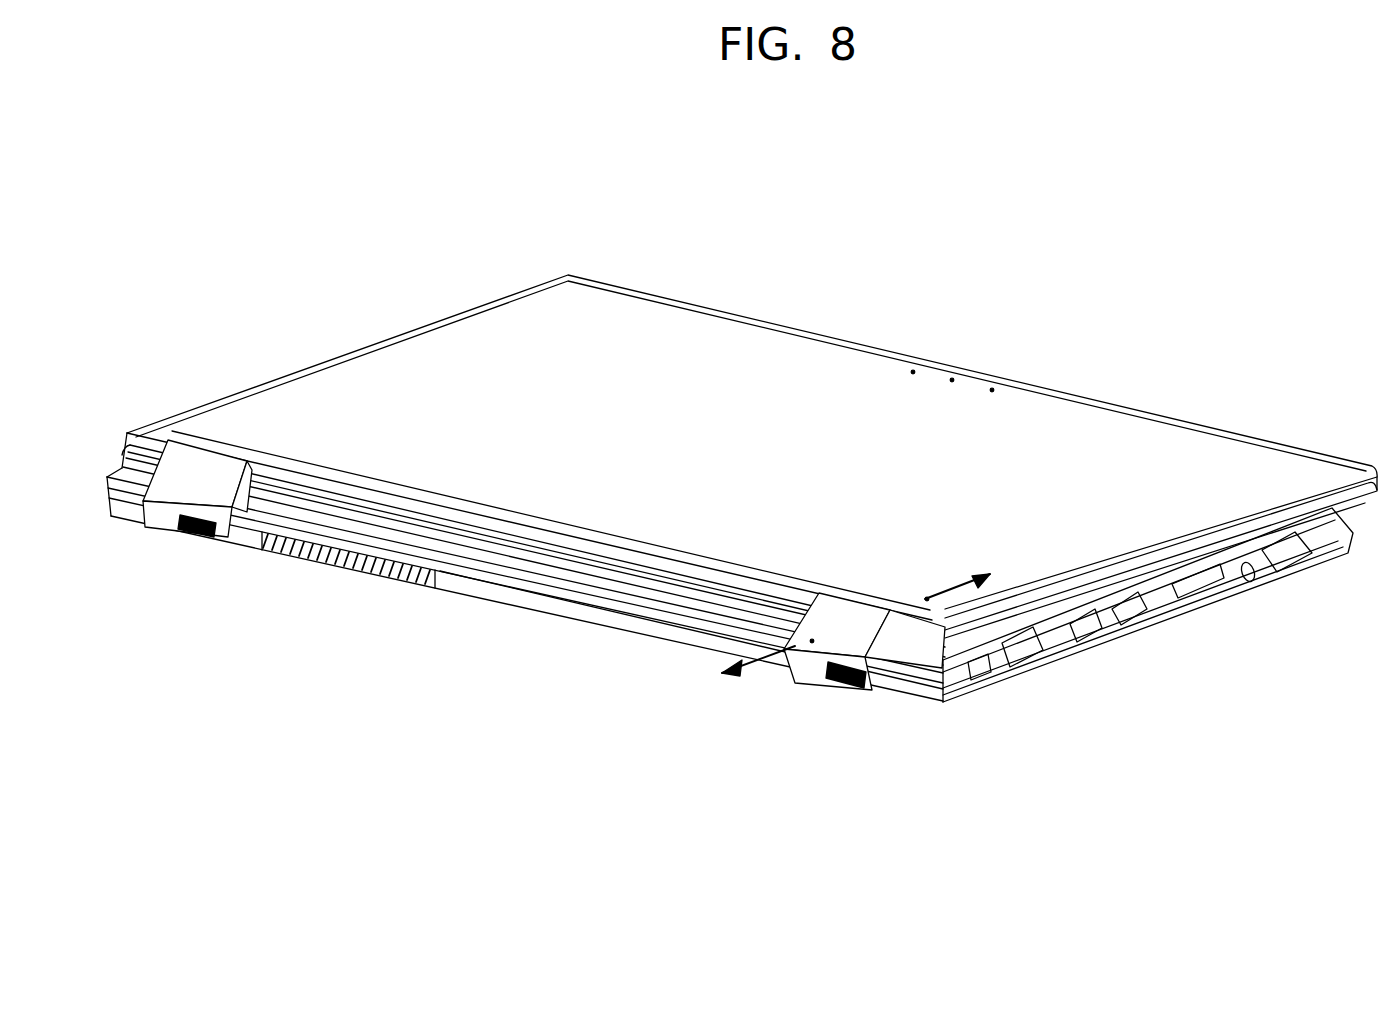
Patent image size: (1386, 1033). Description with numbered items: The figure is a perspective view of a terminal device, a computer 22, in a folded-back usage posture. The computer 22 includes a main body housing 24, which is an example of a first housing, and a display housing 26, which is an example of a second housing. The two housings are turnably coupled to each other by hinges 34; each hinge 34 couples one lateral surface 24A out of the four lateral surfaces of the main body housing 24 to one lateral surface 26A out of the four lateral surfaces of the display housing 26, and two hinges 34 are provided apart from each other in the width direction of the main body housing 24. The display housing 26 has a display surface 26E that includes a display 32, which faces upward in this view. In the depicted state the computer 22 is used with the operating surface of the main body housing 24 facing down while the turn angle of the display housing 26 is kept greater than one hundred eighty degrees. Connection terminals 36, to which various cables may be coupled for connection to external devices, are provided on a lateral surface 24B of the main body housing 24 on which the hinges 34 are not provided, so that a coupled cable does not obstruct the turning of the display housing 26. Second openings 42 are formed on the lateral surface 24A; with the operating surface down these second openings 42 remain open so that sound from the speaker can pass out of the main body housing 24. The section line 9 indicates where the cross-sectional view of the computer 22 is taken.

The line 9- 9 is at (1010, 583).
The computer 22 is at (805, 237).
The main body housing 24 is at (110, 513).
The lateral surface 24A is at (597, 630).
The lateral surface 24B is at (999, 676).
The display housing 26 is at (568, 276).
The lateral surface 26A is at (527, 566).
The display surface 26E is at (168, 425).
The display 32 is at (445, 346).
The hinge 34 is at (245, 448).
The connection terminals 36 is at (978, 680).
The second openings 42 is at (210, 534).